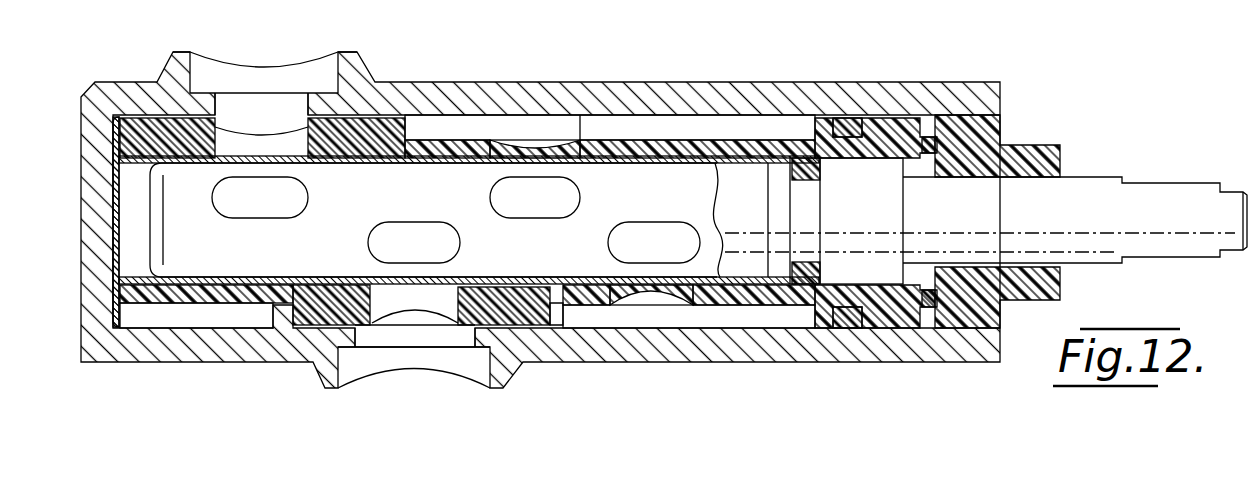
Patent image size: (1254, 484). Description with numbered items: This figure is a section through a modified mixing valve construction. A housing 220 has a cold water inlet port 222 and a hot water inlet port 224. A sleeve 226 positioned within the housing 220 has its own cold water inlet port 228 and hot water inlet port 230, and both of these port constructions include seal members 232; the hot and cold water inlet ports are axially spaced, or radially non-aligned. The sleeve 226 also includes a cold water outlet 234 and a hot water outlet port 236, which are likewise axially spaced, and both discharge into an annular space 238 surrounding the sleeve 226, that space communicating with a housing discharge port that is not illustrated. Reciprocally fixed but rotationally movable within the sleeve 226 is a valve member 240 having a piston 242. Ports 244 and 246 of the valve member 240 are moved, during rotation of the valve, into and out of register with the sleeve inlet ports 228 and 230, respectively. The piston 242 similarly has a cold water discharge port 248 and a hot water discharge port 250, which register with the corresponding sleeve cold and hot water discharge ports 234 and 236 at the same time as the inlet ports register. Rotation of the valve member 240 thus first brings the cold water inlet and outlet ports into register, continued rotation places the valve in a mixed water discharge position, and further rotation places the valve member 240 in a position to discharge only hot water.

The housing 220 is at (750, 52).
The cold water inlet port 222 is at (312, 76).
The hot water inlet port 224 is at (357, 380).
The sleeve 226 is at (760, 148).
The cold water inlet port 228 is at (280, 118).
The hot water inlet port 230 is at (406, 302).
The seal members 232 is at (368, 120).
The cold water outlet port 234 is at (500, 148).
The hot water outlet port 236 is at (693, 292).
The annular space 238 is at (443, 125).
The valve member 240 is at (1073, 193).
The piston 242 is at (465, 165).
The port 244 is at (292, 214).
The port 246 is at (445, 253).
The cold water discharge port 248 is at (568, 205).
The hot water discharge port 250 is at (612, 250).